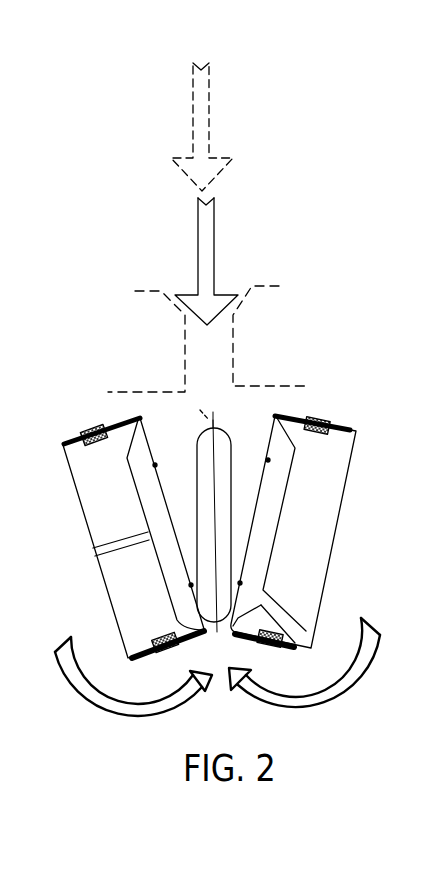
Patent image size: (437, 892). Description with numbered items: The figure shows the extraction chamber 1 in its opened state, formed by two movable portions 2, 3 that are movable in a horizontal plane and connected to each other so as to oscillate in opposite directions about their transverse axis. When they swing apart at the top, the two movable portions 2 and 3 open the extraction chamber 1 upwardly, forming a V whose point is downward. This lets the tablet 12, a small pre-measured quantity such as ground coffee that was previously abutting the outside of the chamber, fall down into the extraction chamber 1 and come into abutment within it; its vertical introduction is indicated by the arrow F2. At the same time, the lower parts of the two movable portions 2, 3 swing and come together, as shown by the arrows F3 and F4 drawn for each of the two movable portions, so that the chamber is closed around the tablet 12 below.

The movable portion 2 is at (368, 518).
The movable portion 3 is at (58, 523).
The tablet 12 is at (221, 448).
The extraction chamber 1 is at (304, 416).
The arrow F2 is at (248, 247).
The arrow F3 is at (103, 748).
The arrow F4 is at (353, 722).